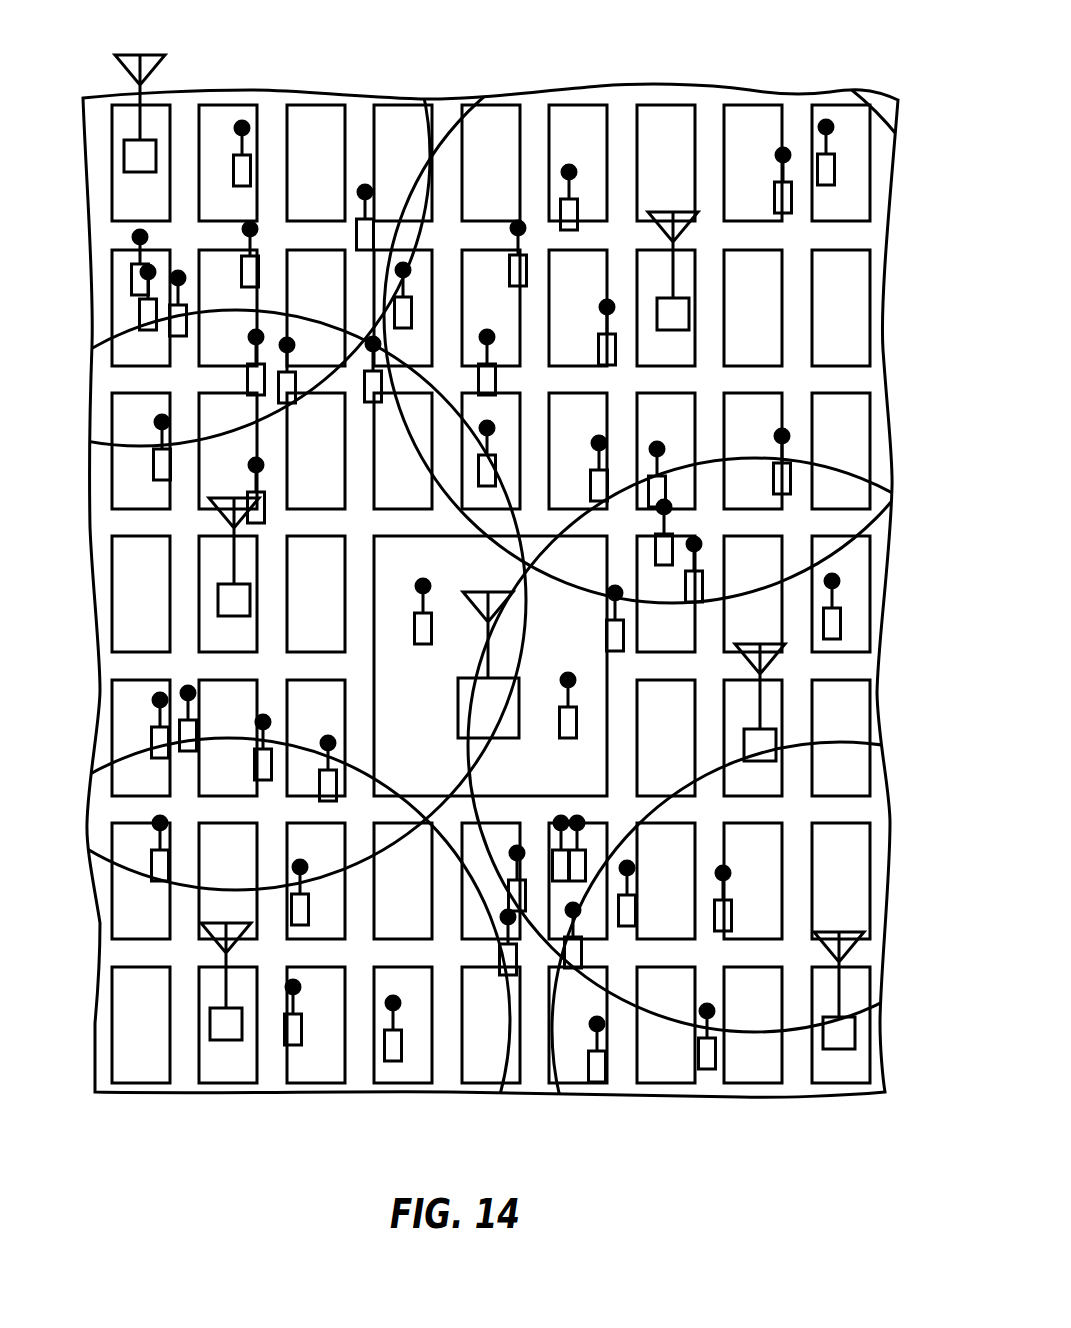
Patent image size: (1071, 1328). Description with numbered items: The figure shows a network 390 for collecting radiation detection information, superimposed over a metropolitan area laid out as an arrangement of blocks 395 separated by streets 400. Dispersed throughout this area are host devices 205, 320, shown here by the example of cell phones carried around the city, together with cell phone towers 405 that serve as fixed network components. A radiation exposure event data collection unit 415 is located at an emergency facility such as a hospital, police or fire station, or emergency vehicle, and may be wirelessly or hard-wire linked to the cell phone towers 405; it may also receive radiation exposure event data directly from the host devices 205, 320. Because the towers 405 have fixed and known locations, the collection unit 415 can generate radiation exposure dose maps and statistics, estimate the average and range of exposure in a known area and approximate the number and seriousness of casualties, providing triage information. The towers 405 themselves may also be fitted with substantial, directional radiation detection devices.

The network 390 is at (838, 76).
The blocks 395 is at (767, 311).
The streets 400 is at (730, 244).
The cell phone towers 405 is at (150, 155).
The radiation exposure event data collection unit 415 is at (507, 723).
The host device 205 is at (486, 601).
The host device 320 is at (248, 172).